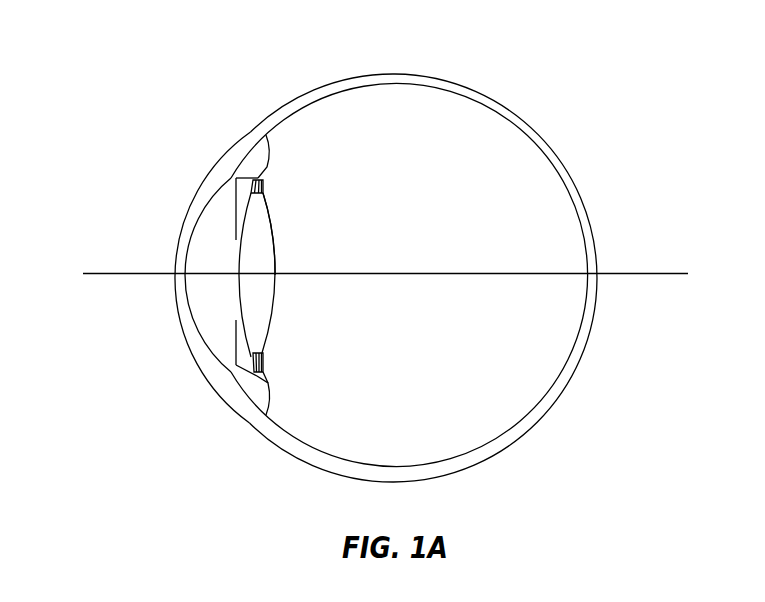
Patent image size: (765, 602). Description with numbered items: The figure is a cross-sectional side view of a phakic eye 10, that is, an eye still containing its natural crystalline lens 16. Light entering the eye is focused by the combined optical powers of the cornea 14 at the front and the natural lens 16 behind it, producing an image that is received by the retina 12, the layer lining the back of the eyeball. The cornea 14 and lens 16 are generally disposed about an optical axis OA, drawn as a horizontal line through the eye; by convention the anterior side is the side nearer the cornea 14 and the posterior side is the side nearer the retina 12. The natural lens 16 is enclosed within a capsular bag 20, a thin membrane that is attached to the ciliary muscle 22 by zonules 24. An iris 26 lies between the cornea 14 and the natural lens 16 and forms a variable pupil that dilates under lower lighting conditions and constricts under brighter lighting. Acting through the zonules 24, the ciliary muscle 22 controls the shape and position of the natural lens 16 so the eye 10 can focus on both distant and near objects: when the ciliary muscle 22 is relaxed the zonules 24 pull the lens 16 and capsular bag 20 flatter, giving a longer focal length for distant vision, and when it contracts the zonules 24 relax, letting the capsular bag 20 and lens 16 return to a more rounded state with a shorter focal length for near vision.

The eye 10 is at (131, 43).
The optical axis OA is at (140, 272).
The retina 12 is at (575, 348).
The cornea 14 is at (185, 333).
The natural crystalline lens 16 is at (272, 224).
The capsular bag 20 is at (275, 302).
The ciliary muscle 22 is at (270, 403).
The zonules 24 is at (263, 363).
The iris 26 is at (236, 340).